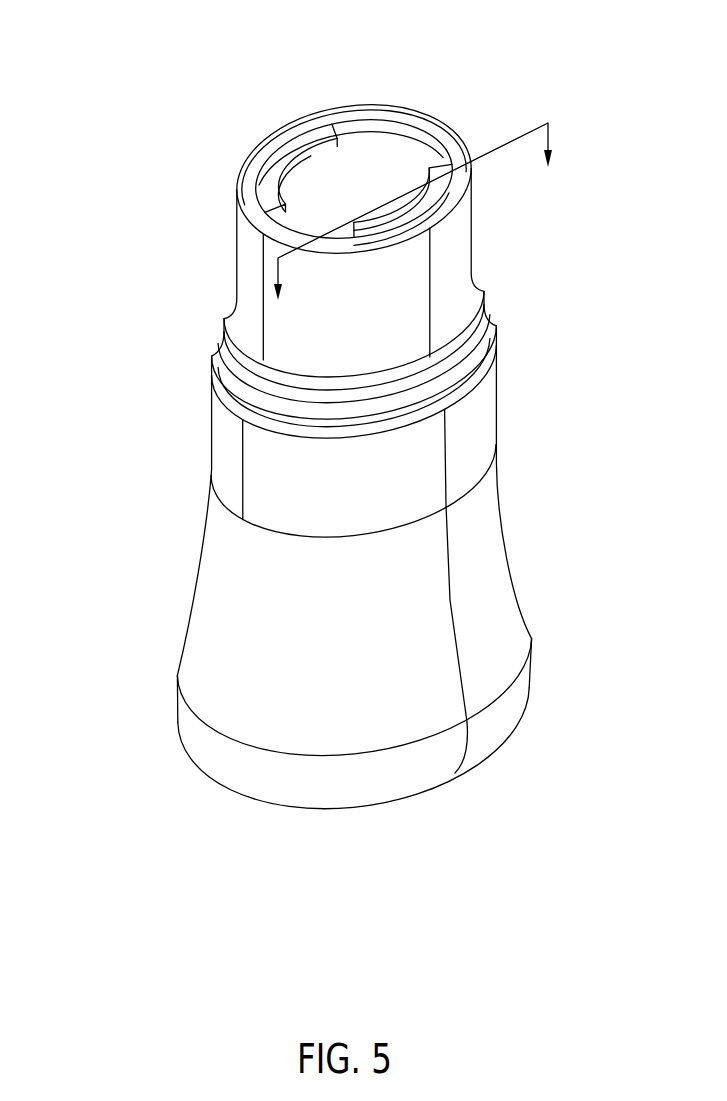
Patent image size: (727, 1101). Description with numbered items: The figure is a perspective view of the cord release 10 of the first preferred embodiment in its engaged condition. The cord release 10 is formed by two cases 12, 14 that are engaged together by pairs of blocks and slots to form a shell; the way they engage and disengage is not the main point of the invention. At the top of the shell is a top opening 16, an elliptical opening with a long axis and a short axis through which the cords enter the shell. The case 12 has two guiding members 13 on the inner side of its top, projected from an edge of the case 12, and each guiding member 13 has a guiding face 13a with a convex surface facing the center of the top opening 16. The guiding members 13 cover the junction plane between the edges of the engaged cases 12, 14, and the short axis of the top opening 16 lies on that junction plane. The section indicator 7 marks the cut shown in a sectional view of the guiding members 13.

The cord release 10 is at (112, 111).
The case 12 is at (228, 593).
The guiding member 13 is at (316, 136).
The guiding face 13a is at (383, 167).
The case 14 is at (478, 567).
The top opening 16 is at (418, 140).
The section line for FIG. 7 is at (415, 230).